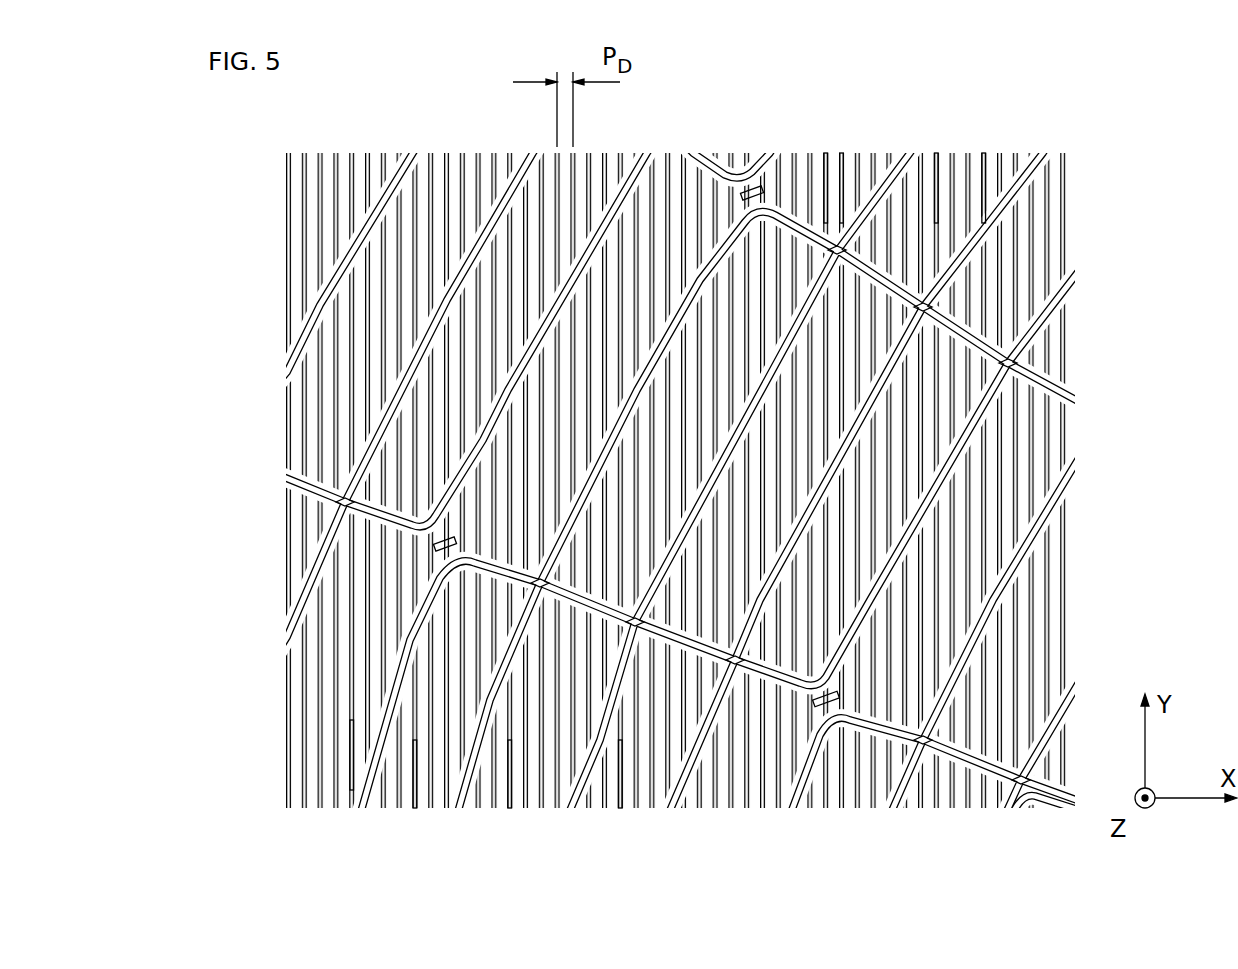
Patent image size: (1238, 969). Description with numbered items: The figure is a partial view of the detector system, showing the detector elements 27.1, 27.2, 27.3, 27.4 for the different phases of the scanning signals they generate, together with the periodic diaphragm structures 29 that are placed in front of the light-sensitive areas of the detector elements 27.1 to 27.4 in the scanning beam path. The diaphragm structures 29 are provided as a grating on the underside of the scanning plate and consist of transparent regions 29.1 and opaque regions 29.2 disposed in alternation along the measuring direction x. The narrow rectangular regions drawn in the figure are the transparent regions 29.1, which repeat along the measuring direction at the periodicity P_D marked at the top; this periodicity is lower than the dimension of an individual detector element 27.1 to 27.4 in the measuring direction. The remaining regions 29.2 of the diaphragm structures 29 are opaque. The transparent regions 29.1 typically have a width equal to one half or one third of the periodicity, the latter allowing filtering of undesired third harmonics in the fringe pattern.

The diaphragm structures 29 is at (817, 153).
The transparent regions 29.1 is at (933, 153).
The opaque regions 29.2 is at (988, 153).
The detector element 27.1 is at (352, 795).
The detector element 27.2 is at (413, 800).
The detector element 27.3 is at (505, 800).
The detector element 27.4 is at (613, 800).